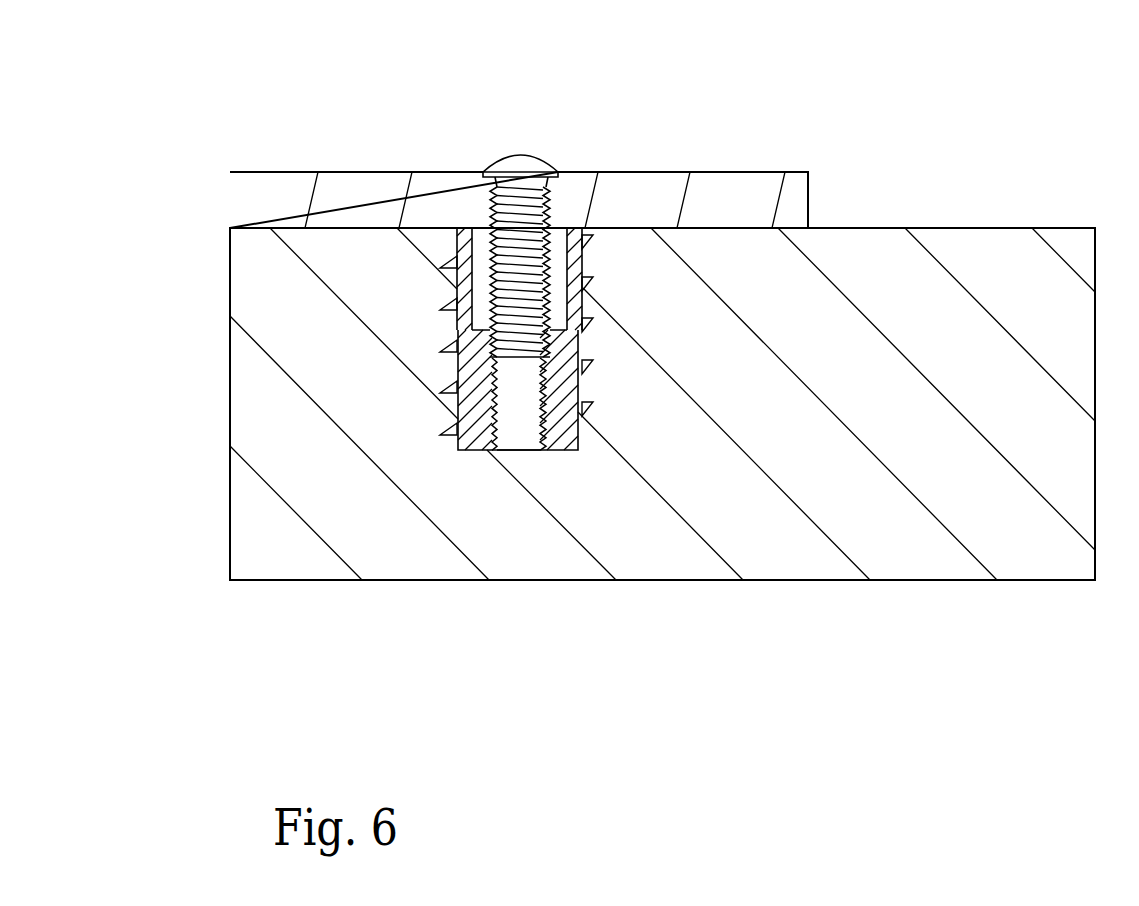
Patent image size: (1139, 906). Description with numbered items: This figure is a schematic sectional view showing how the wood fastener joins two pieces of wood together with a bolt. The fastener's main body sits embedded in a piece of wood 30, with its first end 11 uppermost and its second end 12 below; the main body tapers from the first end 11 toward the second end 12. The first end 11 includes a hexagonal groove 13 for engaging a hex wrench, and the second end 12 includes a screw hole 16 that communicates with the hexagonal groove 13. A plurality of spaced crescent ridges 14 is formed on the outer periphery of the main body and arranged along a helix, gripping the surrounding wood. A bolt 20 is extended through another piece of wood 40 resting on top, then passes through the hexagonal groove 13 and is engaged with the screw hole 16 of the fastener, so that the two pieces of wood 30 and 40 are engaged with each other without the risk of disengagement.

The first end 11 is at (580, 262).
The second end 12 is at (560, 380).
The hexagonal groove 13 is at (573, 250).
The ridges 14 is at (455, 268).
The screw hole 16 is at (522, 428).
The bolt 20 is at (522, 163).
The piece of wood 30 is at (248, 395).
The another piece of wood 40 is at (258, 213).